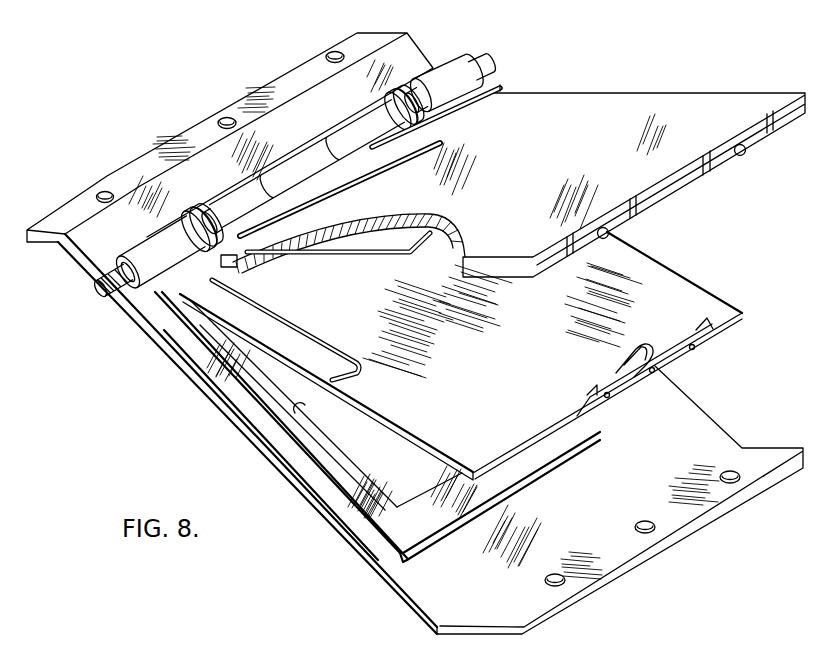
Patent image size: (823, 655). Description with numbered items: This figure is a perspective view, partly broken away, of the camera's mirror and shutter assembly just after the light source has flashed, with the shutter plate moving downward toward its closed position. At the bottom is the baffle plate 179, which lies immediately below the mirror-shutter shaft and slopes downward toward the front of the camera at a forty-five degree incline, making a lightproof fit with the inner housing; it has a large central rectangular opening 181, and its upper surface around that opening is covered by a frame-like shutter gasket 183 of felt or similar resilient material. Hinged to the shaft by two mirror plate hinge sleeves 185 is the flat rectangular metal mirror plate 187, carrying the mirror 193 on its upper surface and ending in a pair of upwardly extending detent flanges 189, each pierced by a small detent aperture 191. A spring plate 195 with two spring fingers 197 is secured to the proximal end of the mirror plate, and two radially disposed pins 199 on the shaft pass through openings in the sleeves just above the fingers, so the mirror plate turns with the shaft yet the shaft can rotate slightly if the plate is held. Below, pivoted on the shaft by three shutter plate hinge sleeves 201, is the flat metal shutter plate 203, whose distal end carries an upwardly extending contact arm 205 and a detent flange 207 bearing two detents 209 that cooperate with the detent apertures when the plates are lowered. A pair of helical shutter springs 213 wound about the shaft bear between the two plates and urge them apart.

The baffle plate 179 is at (697, 448).
The central rectangular opening 181 is at (300, 409).
The shutter gasket 183 is at (403, 528).
The mirror plate hinge sleeves 185 is at (355, 133).
The mirror plate 187 is at (687, 185).
The detent flanges 189 is at (622, 225).
The detent aperture 191 is at (742, 155).
The mirror 193 is at (644, 102).
The spring plate 195 is at (157, 288).
The spring fingers 197 is at (405, 122).
The radially disposed pins 199 is at (427, 123).
The shutter plate hinge sleeves 201 is at (447, 76).
The shutter plate 203 is at (688, 293).
The contact arm 205 is at (620, 360).
The detent flange 207 is at (675, 355).
The detents 209 is at (703, 345).
The helical shutter springs 213 is at (197, 221).